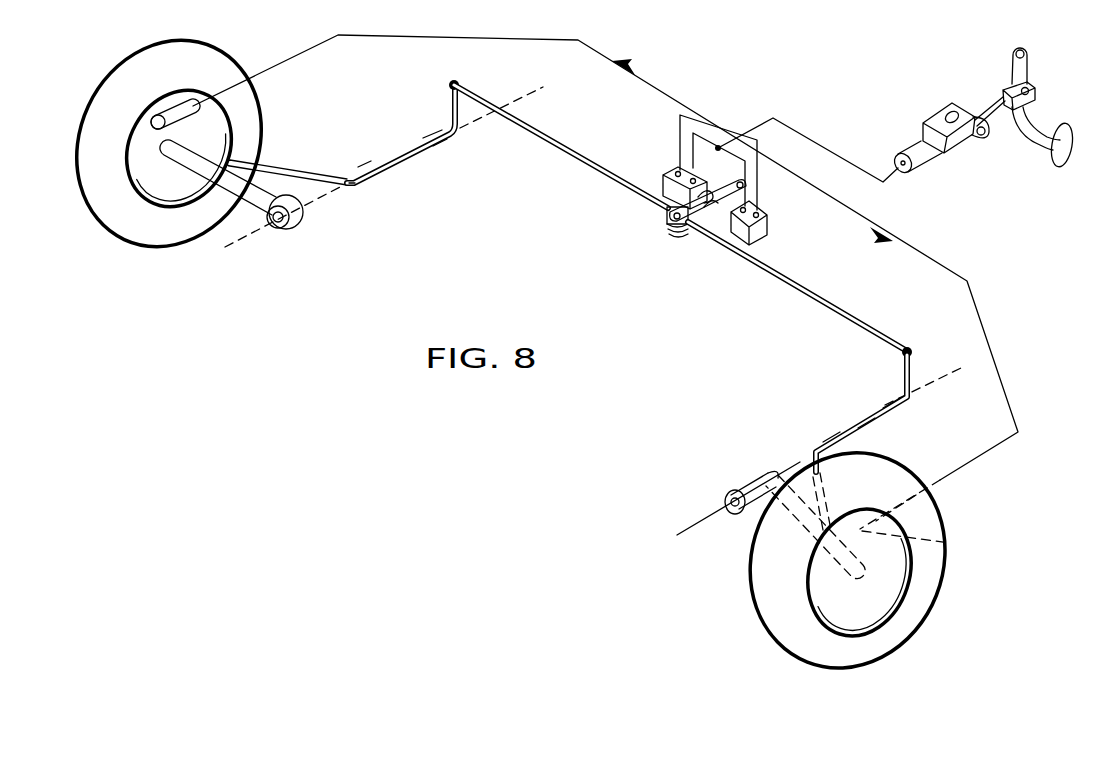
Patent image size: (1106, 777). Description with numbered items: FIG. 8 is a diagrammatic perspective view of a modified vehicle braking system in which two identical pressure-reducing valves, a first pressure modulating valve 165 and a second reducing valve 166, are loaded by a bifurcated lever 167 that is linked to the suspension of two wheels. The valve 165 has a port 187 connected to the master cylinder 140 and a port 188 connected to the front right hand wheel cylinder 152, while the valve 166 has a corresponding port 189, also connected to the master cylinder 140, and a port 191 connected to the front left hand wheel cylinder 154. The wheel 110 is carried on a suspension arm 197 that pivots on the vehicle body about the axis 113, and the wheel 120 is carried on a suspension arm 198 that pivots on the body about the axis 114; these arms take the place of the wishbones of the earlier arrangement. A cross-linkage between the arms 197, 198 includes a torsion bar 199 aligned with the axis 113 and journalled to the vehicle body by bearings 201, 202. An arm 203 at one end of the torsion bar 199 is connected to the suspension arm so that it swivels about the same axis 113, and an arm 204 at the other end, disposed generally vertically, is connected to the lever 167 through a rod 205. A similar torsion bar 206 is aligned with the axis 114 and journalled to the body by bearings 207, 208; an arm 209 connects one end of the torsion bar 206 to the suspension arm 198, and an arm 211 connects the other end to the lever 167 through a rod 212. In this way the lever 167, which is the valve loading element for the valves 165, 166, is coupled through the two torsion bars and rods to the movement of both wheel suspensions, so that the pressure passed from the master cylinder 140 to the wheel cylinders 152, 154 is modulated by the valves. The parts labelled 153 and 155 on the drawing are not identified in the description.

The wheel 110 is at (247, 127).
The axis 113 is at (517, 105).
The axis 114 is at (943, 380).
The wheel 120 is at (750, 582).
The master cylinder 140 is at (923, 130).
The front right hand wheel cylinder 152 is at (172, 110).
The wheel hub 153 is at (170, 190).
The front left hand wheel cylinder 154 is at (928, 527).
The wheel hub 155 is at (887, 583).
The first pressure modulating valve 165 is at (775, 240).
The second reducing valve 166 is at (652, 174).
The bifurcated lever 167 is at (708, 220).
The port 187 is at (760, 212).
The port 188 is at (735, 223).
The port 189 is at (678, 172).
The port 191 is at (672, 210).
The suspension arm 197 is at (253, 204).
The suspension arm 198 is at (748, 537).
The torsion bar 199 is at (412, 150).
The bearing 201 is at (377, 180).
The bearing 202 is at (447, 142).
The arm 203 is at (290, 167).
The arm 204 is at (450, 108).
The rod 205 is at (562, 155).
The torsion bar 206 is at (865, 428).
The bearing 207 is at (823, 442).
The bearing 208 is at (880, 407).
The arm 209 is at (793, 467).
The arm 211 is at (903, 362).
The rod 212 is at (837, 303).